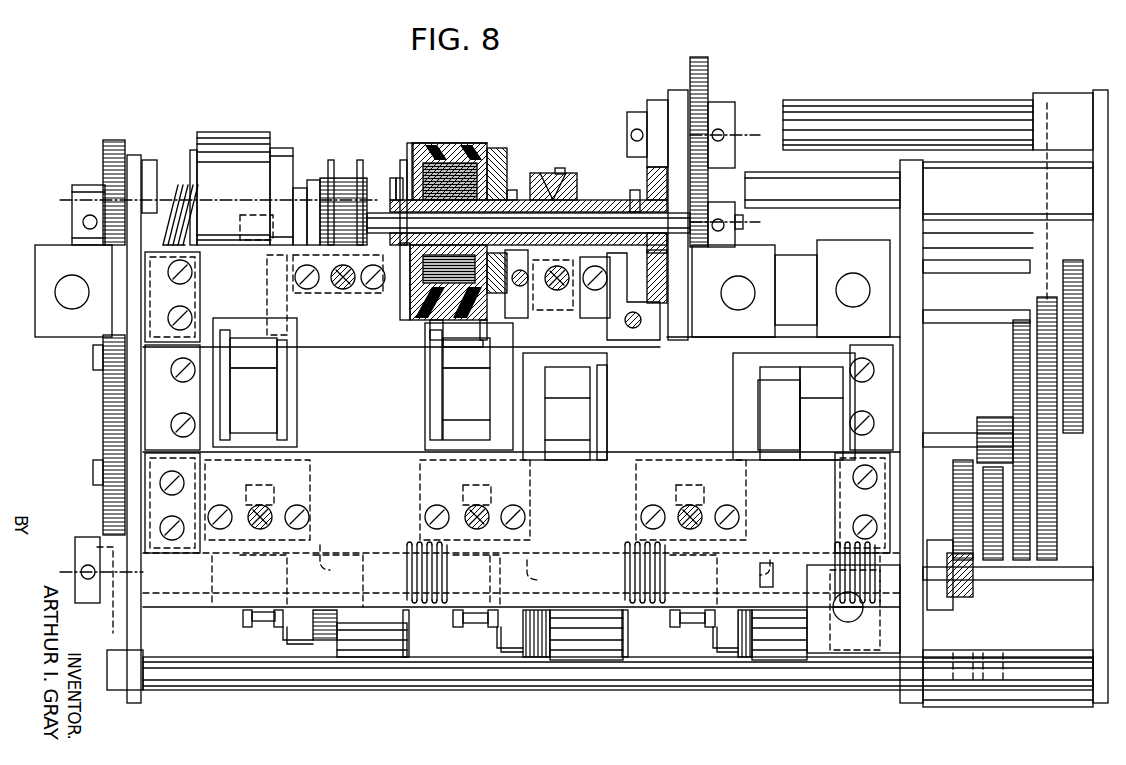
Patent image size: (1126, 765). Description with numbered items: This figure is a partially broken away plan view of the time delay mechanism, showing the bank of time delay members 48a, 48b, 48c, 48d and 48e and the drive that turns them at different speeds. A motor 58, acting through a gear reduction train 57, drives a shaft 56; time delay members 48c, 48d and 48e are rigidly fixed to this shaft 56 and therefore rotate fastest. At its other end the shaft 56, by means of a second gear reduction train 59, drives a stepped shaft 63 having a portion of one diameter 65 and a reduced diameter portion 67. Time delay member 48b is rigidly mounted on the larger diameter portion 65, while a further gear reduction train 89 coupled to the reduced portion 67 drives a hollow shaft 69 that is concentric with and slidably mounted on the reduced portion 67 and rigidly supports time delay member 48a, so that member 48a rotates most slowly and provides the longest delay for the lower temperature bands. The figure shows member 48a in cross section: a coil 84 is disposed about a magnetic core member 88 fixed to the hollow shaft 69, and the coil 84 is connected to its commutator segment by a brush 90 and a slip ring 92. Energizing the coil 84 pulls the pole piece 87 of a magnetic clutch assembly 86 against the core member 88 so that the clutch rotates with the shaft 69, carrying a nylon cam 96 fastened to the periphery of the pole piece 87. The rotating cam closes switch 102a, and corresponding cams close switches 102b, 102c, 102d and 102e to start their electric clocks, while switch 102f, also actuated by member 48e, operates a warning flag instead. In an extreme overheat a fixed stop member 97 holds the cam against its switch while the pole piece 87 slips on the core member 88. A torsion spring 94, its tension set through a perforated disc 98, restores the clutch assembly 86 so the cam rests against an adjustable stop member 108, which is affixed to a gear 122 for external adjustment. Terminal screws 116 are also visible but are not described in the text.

The time delay member 48a is at (431, 143).
The time delay member 48b is at (250, 132).
The time delay member 48c is at (352, 653).
The time delay member 48d is at (593, 637).
The time delay member 48e is at (787, 637).
The shaft 56 is at (75, 545).
The gear reduction train 57 is at (1005, 410).
The motor 58 is at (968, 100).
The gear reduction train 59 is at (103, 436).
The stepped shaft 63 is at (72, 211).
The larger diameter portion of shaft 65 is at (340, 176).
The reduced diameter portion of shaft 67 is at (590, 218).
The hollow shaft 69 is at (612, 205).
The coil 84 is at (486, 150).
The magnetic clutch assembly 86 is at (450, 150).
The pole piece 87 is at (409, 148).
The magnetic core member 88 is at (505, 150).
The gear reduction train 89 is at (712, 70).
The brush 90 is at (313, 180).
The slip ring 92 is at (300, 188).
The torsion spring 94 is at (180, 185).
The nylon cam 96 is at (462, 160).
The fixed stop member 97 is at (215, 402).
The perforated disc 98 is at (193, 150).
The switch 102a is at (463, 410).
The switch 102b is at (243, 372).
The switch 102c is at (380, 372).
The switch 102d is at (577, 420).
The switch 102e is at (757, 378).
The switch 102f is at (835, 410).
The adjustable stop member 108 is at (240, 232).
The terminal screw 116 is at (350, 284).
The gear 122 is at (403, 163).